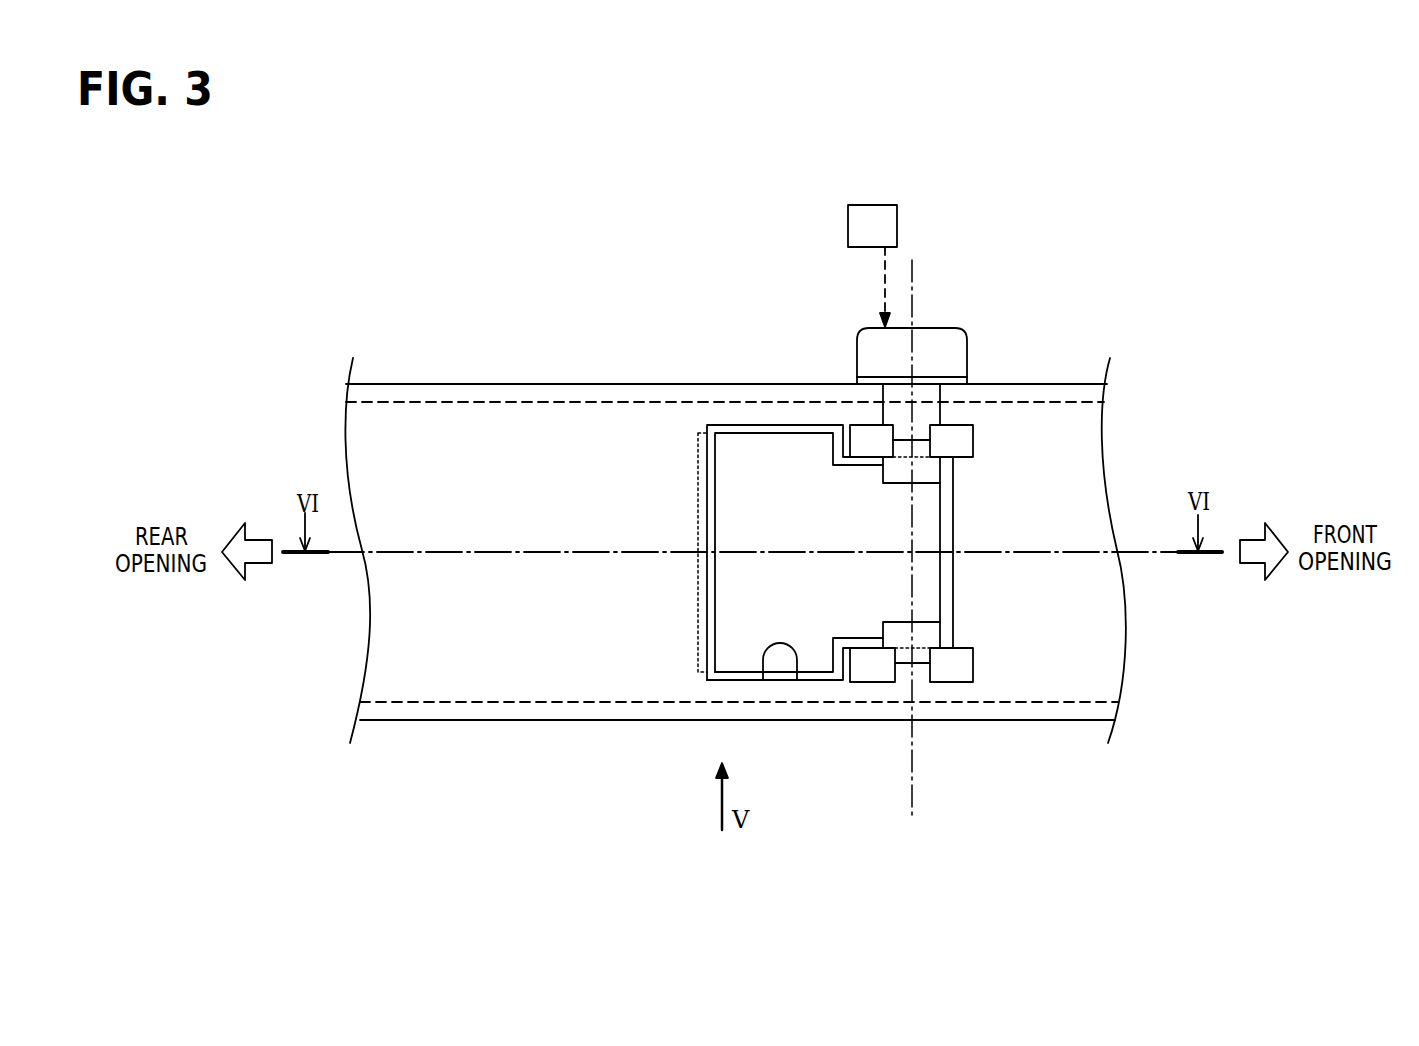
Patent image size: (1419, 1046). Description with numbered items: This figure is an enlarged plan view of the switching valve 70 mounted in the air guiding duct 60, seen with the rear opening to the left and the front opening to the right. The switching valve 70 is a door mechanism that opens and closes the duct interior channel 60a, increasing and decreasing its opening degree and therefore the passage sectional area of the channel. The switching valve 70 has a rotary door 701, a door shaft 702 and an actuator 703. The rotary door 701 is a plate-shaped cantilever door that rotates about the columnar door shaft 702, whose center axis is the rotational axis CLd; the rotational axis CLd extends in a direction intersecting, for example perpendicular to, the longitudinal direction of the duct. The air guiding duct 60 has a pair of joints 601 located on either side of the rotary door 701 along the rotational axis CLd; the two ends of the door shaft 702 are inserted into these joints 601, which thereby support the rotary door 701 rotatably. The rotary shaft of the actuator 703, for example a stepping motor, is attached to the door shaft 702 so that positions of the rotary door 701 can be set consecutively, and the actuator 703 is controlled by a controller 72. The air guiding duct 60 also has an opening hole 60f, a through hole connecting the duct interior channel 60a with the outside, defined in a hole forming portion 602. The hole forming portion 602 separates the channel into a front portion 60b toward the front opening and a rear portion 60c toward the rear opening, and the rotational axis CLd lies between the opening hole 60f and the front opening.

The air guiding duct 60 is at (388, 393).
The duct interior channel 60a is at (557, 392).
The front portion 60b is at (1084, 431).
The rear portion 60c is at (497, 455).
The opening hole 60f is at (797, 680).
The hole forming portion 602 is at (830, 693).
The joint 601 is at (863, 440).
The switching valve 70 is at (952, 552).
The rotary door 701 is at (748, 452).
The door shaft 702 is at (917, 447).
The actuator 703 is at (944, 338).
The controller 72 is at (882, 220).
The rotational axis CLd is at (914, 275).